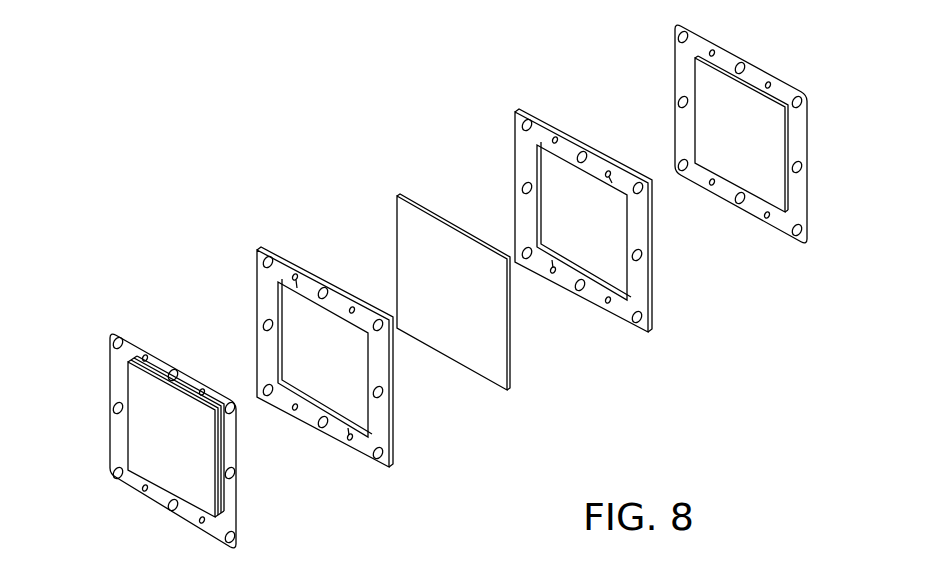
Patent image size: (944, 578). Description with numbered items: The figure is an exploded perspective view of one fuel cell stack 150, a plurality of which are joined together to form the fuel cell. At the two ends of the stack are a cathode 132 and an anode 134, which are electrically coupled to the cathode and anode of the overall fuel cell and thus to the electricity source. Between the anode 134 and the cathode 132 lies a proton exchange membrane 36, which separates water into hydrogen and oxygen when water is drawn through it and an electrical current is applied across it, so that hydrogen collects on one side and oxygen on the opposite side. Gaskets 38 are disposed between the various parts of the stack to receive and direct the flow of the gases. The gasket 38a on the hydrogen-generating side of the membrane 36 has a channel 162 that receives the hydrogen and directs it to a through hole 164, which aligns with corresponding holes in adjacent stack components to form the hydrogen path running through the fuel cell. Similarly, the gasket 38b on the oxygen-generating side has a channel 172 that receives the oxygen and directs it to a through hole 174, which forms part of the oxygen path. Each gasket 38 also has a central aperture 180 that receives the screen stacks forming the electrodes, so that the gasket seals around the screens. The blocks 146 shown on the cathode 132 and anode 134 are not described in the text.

The fuel cell stack 150 is at (243, 158).
The gaskets 38 is at (262, 227).
The gasket 38a is at (383, 440).
The gasket 38b is at (638, 300).
The proton exchange membrane 36 is at (398, 193).
The cathode 132 is at (157, 367).
The anode 134 is at (700, 80).
The electrode block 146 is at (140, 440).
The channel 162 is at (298, 285).
The through hole 164 is at (296, 276).
The channel 172 is at (608, 171).
The through hole 174 is at (628, 170).
The aperture 180 is at (350, 388).